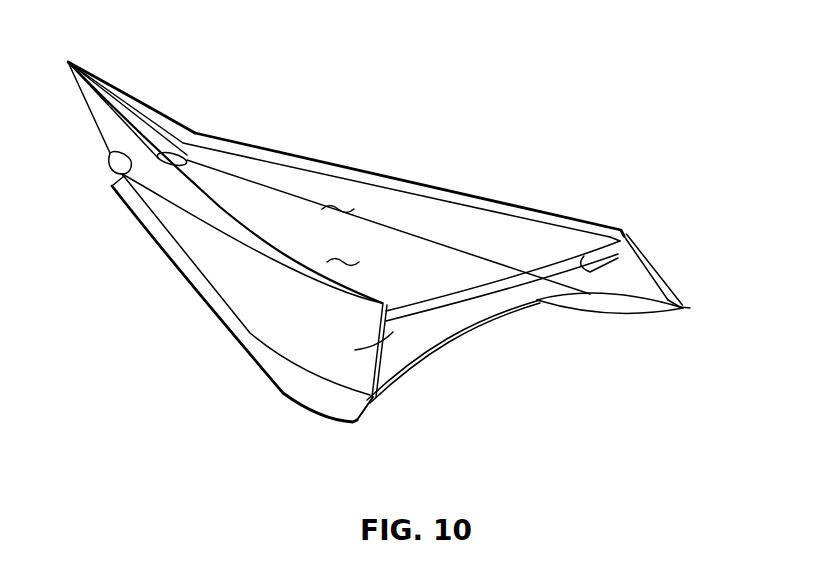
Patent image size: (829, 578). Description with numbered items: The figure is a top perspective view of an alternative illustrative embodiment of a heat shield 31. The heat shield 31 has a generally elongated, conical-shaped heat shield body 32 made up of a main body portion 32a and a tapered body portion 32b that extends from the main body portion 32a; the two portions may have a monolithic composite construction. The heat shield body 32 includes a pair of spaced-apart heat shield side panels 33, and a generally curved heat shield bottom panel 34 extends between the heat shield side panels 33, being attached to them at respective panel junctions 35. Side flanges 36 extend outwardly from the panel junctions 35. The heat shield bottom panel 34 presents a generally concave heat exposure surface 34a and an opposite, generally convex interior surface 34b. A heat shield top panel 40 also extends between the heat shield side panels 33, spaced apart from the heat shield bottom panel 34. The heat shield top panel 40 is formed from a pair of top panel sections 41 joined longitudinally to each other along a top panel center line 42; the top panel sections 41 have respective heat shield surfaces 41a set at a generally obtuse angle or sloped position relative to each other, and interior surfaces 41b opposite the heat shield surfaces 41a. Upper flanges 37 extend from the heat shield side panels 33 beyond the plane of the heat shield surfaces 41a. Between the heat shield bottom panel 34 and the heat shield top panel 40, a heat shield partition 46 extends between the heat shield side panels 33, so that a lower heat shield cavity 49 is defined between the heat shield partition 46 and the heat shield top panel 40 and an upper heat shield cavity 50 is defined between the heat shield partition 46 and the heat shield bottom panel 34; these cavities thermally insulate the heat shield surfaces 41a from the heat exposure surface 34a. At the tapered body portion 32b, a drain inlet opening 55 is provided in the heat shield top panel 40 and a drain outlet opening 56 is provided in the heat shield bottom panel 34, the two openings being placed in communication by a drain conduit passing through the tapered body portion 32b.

The heat shield 31 is at (468, 146).
The heat shield body 32 is at (350, 169).
The main body portion 32a is at (383, 171).
The tapered body portion 32b is at (125, 96).
The heat shield side panels 33 is at (363, 370).
The heat shield bottom panel 34 is at (500, 312).
The heat exposure surface 34a is at (588, 301).
The interior surface 34b is at (480, 313).
The panel junctions 35 is at (377, 403).
The side flanges 36 is at (327, 400).
The upper flanges 37 is at (325, 168).
The heat shield top panel 40 is at (588, 243).
The top panel sections 41 is at (515, 208).
The heat shield surfaces 41a is at (339, 226).
The interior surfaces 41b is at (639, 257).
The top panel center line 42 is at (391, 229).
The heat shield partition 46 is at (422, 314).
The lower heat shield cavity 49 is at (443, 323).
The upper heat shield cavity 50 is at (553, 272).
The drain inlet opening 55 is at (185, 151).
The drain outlet opening 56 is at (120, 174).